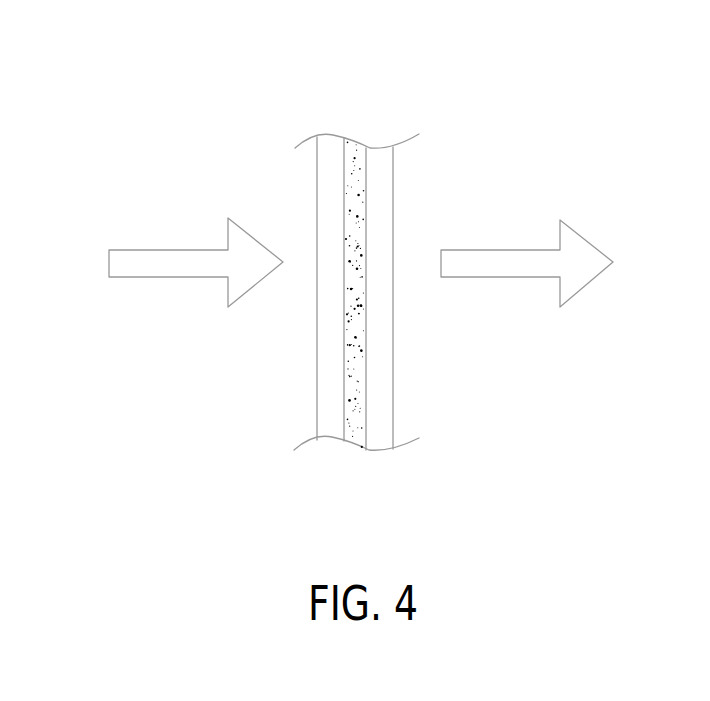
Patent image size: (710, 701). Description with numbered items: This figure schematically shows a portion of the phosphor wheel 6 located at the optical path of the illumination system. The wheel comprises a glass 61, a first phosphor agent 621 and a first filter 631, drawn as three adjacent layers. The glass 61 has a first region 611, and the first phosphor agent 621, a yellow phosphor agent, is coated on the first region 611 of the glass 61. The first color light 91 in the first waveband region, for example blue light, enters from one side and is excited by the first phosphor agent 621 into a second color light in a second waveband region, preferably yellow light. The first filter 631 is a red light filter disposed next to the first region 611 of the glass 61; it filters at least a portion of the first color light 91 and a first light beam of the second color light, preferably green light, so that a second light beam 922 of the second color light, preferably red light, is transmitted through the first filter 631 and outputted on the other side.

The light emitting module 6 is at (622, 53).
The glass 61 is at (296, 183).
The first region 611 is at (325, 391).
The first phosphor agent 621 is at (362, 198).
The first filter 631 is at (382, 410).
The first color light 91 is at (178, 265).
The second light beam 922 is at (586, 257).